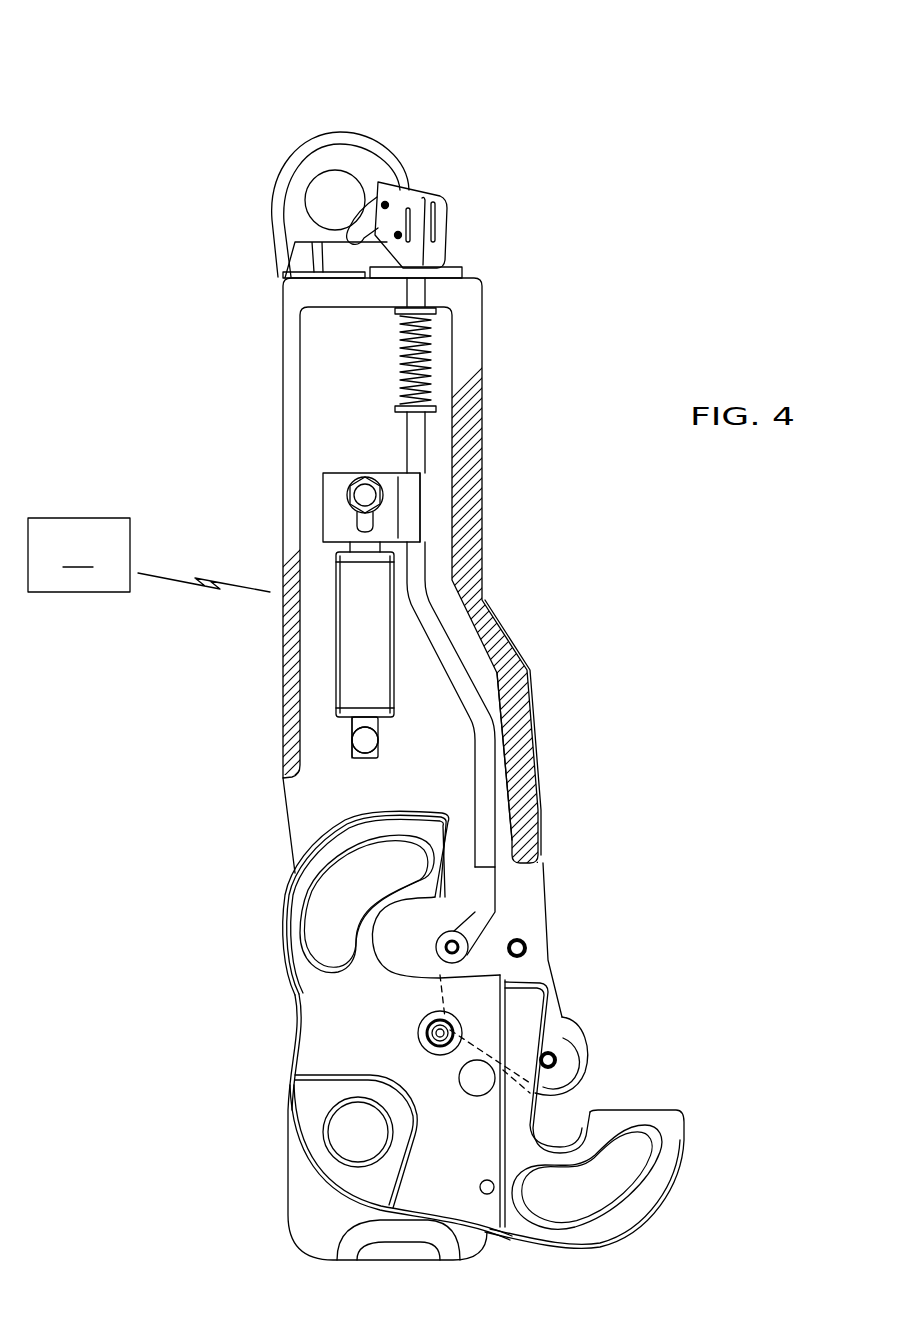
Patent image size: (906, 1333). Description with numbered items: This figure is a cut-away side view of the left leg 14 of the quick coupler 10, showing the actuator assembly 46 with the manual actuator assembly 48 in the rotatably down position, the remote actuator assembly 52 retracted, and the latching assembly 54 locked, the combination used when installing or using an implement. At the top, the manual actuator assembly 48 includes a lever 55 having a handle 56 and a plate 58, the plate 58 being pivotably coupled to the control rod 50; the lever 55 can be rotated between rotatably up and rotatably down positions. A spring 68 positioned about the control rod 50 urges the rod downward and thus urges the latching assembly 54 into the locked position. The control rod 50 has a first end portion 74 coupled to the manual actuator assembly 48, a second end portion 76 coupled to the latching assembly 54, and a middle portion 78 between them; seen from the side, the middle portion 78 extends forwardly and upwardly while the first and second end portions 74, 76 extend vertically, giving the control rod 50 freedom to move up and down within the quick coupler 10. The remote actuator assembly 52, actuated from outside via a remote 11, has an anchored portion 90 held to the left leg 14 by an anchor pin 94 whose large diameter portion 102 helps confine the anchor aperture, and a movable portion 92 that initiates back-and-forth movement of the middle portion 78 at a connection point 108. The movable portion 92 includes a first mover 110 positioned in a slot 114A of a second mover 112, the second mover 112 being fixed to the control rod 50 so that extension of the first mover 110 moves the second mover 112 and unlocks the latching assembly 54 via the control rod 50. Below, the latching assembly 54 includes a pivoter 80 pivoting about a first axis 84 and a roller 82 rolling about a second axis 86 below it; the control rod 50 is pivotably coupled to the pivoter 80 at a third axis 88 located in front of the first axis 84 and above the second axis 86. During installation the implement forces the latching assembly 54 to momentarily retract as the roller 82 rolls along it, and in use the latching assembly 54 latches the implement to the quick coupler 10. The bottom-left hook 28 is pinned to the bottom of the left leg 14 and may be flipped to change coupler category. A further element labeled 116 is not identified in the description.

The quick coupler 10 is at (270, 55).
The remote 11 is at (149, 555).
The left leg 14 is at (293, 845).
The bottom-left hook 28 is at (683, 1150).
The actuator assembly 46 is at (505, 352).
The manual actuator assembly 48 is at (460, 207).
The control rod 50 is at (447, 705).
The remote actuator assembly 52 is at (365, 765).
The latching assembly 54 is at (578, 957).
The lever 55 is at (417, 166).
The handle 56 is at (333, 142).
The plate 58 is at (450, 258).
The spring 68 is at (400, 366).
The first end portion 74 is at (428, 443).
The second end portion 76 is at (498, 797).
The middle portion 78 is at (445, 655).
The pivoter 80 is at (572, 997).
The roller 82 is at (580, 1055).
The first axis 84 is at (525, 948).
The second axis 86 is at (548, 1058).
The third axis 88 is at (470, 900).
The anchored portion 90 is at (327, 640).
The movable portion 92 is at (310, 505).
The anchor pin 94 is at (352, 750).
The large diameter portion 102 is at (259, 731).
The connection point 108 is at (420, 509).
The first mover 110 is at (360, 520).
The second mover 112 is at (338, 473).
The slot 114A is at (380, 522).
The bore 116 is at (398, 520).